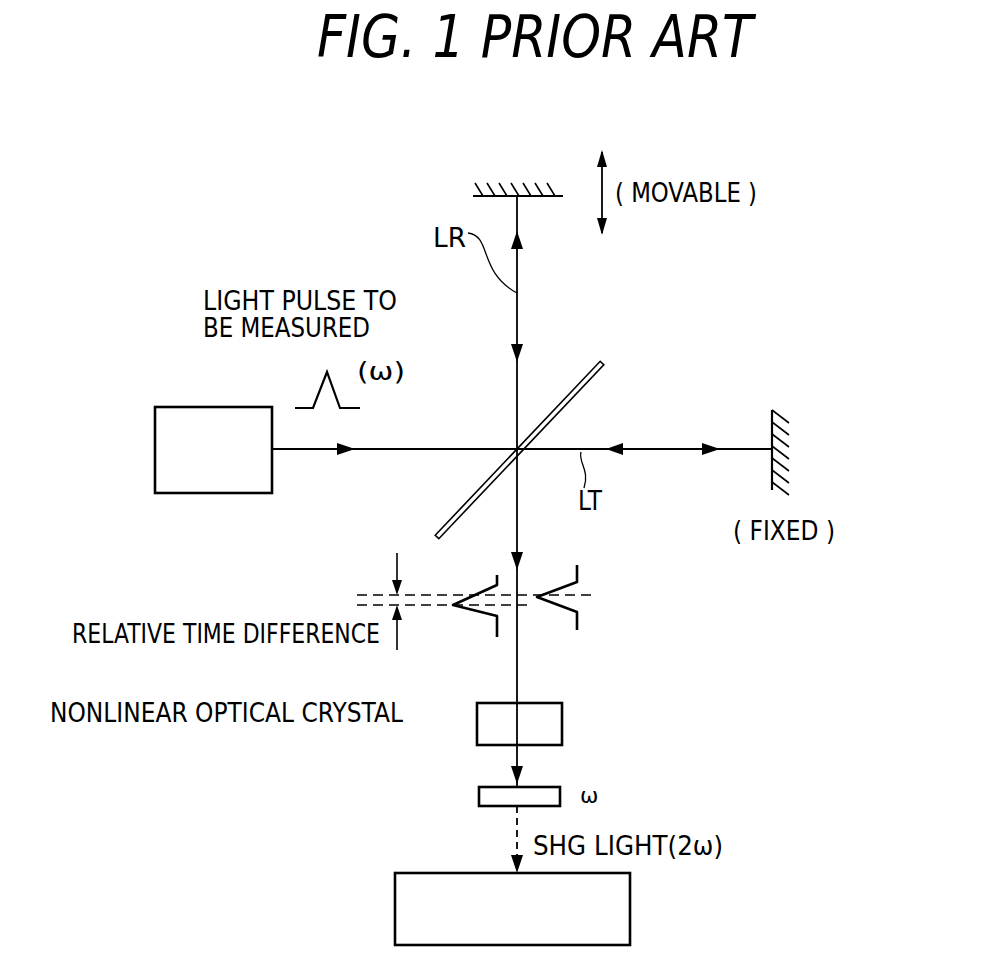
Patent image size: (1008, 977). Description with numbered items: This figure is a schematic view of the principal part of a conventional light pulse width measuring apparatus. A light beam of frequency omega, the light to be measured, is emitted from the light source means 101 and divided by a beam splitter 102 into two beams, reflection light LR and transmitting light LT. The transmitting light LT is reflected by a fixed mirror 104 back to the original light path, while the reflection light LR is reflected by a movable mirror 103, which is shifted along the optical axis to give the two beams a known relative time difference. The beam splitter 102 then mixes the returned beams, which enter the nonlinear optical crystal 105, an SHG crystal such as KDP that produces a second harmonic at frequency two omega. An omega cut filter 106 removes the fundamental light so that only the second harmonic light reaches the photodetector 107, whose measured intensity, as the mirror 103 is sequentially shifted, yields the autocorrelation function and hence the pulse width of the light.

The light source means 101 is at (252, 494).
The beam splitter 102 is at (589, 372).
The movable mirror 103 is at (545, 197).
The fixed mirror 104 is at (781, 418).
The nonlinear optical crystal 105 is at (477, 714).
The ω cut filter 106 is at (479, 797).
The photodetector 107 is at (395, 886).